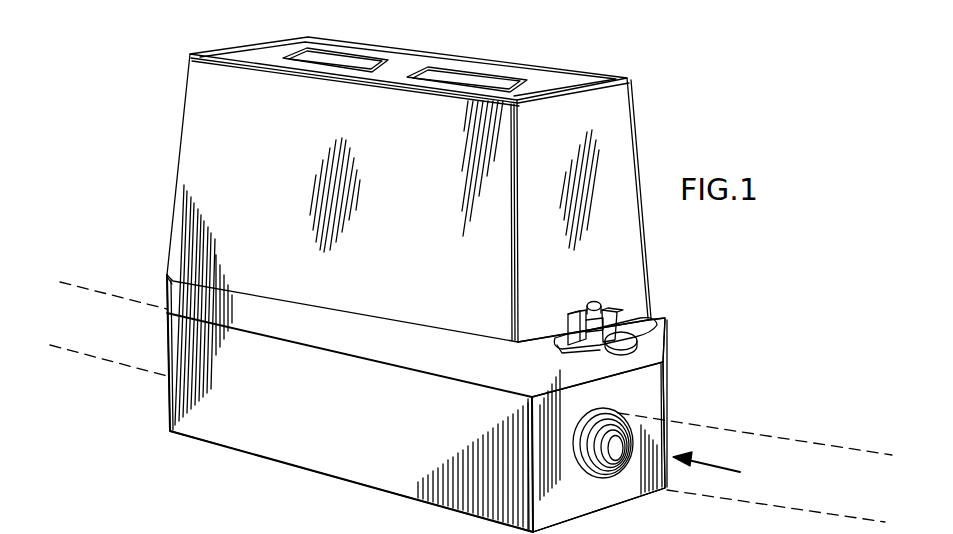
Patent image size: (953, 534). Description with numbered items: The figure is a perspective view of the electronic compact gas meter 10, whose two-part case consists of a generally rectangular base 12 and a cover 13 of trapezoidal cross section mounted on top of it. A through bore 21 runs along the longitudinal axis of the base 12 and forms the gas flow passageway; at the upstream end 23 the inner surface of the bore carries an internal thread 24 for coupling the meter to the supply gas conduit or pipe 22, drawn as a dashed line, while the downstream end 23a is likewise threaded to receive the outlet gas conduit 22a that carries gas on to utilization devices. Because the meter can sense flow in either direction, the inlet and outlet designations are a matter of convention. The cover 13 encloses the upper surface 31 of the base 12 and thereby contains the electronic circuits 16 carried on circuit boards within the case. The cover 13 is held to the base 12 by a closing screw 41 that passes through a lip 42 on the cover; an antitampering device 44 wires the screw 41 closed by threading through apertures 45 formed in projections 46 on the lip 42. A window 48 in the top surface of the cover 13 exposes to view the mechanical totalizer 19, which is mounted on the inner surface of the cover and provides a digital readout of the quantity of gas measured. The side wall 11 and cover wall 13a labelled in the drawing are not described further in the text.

The compact gas meter 10 is at (160, 449).
The housing side wall 11 is at (672, 383).
The base 12 is at (234, 432).
The cover 13 is at (168, 277).
The cover 13a is at (202, 80).
The electronic circuits 16 is at (351, 482).
The mechanical totalizer 19 is at (352, 63).
The through bore 21 is at (604, 451).
The gas conduit or pipe 22 is at (797, 527).
The outlet gas conduit 22a is at (84, 293).
The upstream end 23 is at (578, 497).
The downstream end 23a is at (168, 389).
The internal thread 24 is at (637, 458).
The upper surface of the base 31 is at (667, 351).
The closing screw 41 is at (598, 301).
The lip 42 is at (648, 316).
The antitampering device 44 is at (625, 338).
The apertures 45 is at (585, 326).
The projections 46 is at (614, 311).
The window 48 is at (463, 77).